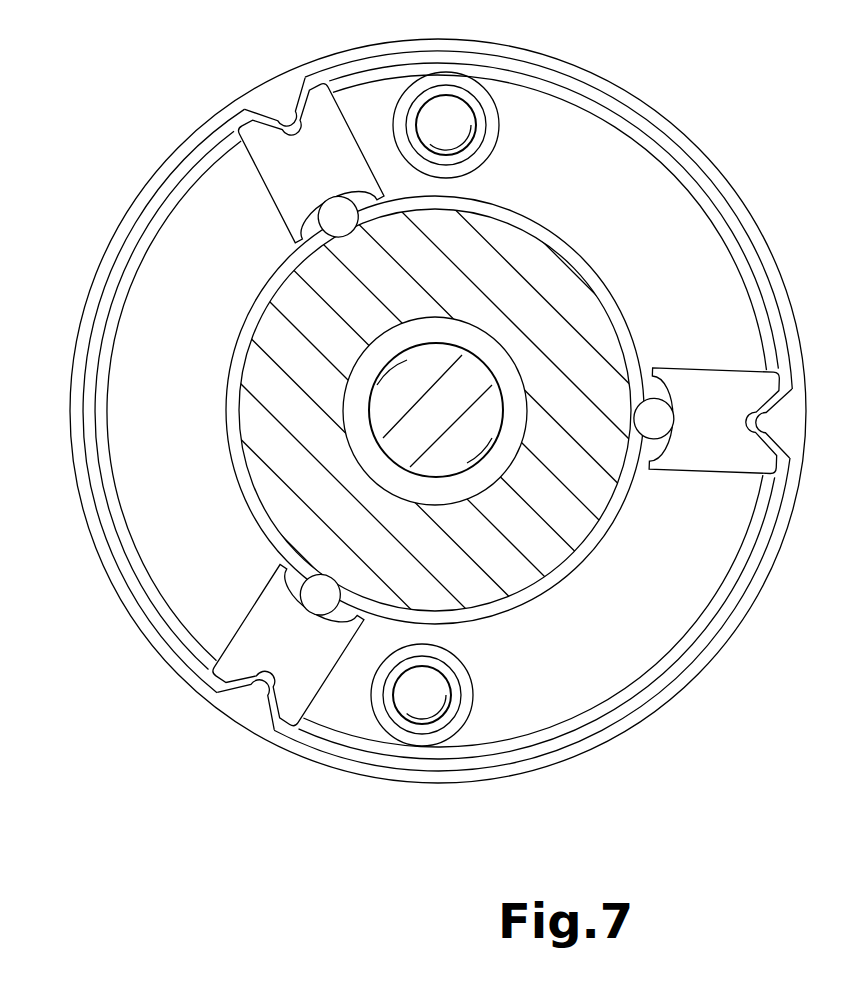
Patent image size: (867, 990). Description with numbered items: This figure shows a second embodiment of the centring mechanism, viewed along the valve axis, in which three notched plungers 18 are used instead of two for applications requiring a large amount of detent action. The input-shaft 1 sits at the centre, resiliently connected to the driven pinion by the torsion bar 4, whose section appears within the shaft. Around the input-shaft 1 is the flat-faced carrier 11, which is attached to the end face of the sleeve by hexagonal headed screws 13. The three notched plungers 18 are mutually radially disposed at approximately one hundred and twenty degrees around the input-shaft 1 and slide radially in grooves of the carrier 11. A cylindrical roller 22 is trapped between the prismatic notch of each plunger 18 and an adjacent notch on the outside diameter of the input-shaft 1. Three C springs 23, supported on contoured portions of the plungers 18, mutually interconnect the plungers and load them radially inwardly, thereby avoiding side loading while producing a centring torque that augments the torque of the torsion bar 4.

The input-shaft 1 is at (583, 512).
The torsion bar 4 is at (462, 358).
The carrier 11 is at (608, 140).
The hexagonal headed screws 13 is at (462, 122).
The notched plunger 18 is at (330, 131).
The cylindrical rollers 22 is at (335, 205).
The C springs 23 is at (683, 161).